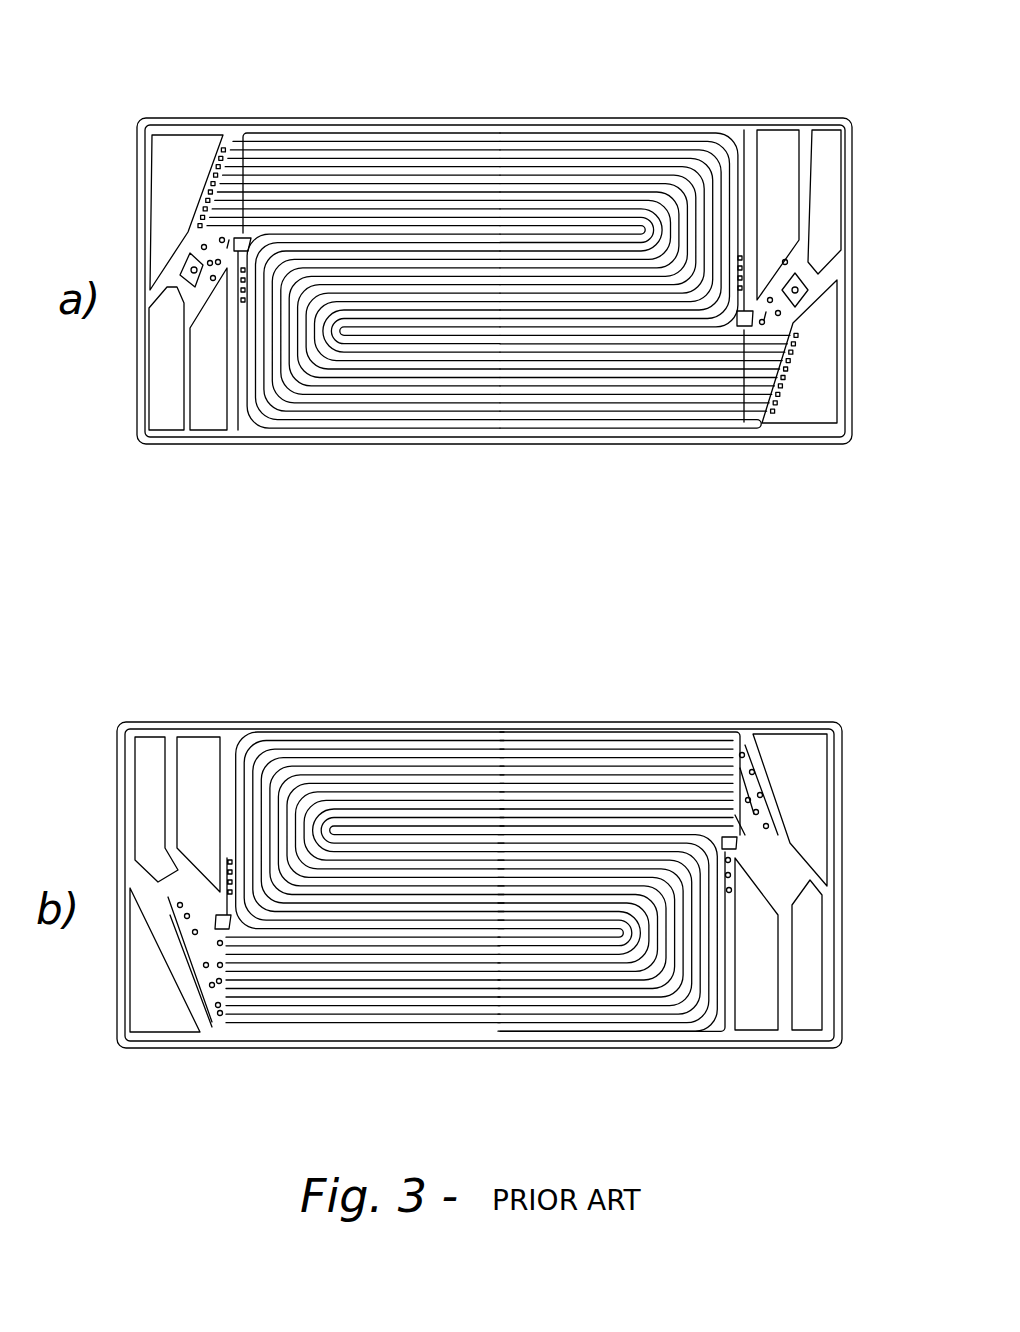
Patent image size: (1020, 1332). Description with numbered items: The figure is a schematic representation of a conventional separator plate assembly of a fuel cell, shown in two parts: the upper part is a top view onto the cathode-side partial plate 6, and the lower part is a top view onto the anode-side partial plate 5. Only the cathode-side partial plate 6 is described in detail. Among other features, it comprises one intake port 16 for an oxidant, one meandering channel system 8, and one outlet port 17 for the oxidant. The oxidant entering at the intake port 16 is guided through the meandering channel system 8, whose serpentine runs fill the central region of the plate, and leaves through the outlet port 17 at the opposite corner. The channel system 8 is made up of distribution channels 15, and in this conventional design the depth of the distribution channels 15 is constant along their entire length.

The anode-side partial plate 5 is at (742, 713).
The cathode-side partial plate 6 is at (750, 108).
The meandering channel system 8 is at (585, 340).
The distribution channels 15 is at (522, 368).
The intake port 16 is at (172, 187).
The outlet port 17 is at (800, 400).